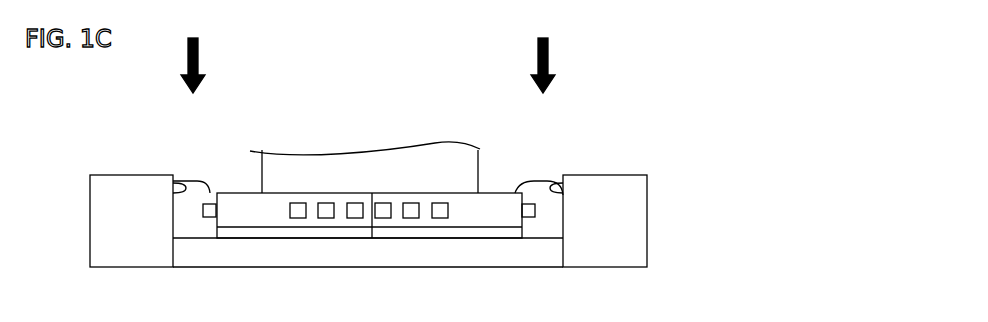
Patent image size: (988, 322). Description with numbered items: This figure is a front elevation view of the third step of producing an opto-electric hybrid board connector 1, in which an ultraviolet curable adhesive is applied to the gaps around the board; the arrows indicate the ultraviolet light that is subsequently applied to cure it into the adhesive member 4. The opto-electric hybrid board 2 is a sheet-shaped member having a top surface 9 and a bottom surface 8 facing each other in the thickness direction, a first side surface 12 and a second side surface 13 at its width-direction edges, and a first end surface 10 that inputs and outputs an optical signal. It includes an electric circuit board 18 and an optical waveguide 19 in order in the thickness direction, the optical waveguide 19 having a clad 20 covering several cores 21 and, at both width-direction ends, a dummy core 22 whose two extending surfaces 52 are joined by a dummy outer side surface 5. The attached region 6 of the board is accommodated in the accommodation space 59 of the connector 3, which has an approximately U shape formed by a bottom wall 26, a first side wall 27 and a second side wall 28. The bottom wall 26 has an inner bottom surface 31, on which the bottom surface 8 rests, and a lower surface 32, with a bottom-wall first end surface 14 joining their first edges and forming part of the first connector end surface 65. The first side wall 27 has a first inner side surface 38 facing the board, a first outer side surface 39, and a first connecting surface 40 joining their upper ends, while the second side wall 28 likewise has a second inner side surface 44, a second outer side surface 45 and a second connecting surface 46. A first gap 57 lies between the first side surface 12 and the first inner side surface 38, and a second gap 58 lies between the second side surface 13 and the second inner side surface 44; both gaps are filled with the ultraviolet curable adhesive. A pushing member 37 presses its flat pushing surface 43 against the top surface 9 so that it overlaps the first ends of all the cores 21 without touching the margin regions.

The opto-electric hybrid board connector 1 is at (372, 300).
The opto-electric hybrid board 2 is at (348, 192).
The connector 3 is at (172, 178).
The adhesive member 4 is at (593, 75).
The dummy outer side surface 5 is at (203, 208).
The attached region 6 is at (323, 192).
The bottom surface 8 is at (398, 241).
The top surface 9 is at (397, 193).
The first end surface 10 is at (247, 215).
The first side surface 12 is at (538, 214).
The second side surface 13 is at (201, 216).
The bottom-wall first end surface 14 is at (531, 262).
The electric circuit board 18 is at (232, 240).
The optical waveguide 19 is at (278, 192).
The clad 20 is at (440, 203).
The core 21 is at (412, 203).
The dummy core 22 is at (209, 194).
The bottom wall 26 is at (474, 270).
The first side wall 27 is at (647, 175).
The second side wall 28 is at (100, 172).
The inner bottom surface 31 is at (372, 193).
The lower surface 32 is at (348, 268).
The pushing member 37 is at (479, 160).
The first inner side surface 38 is at (549, 182).
The first outer side surface 39 is at (648, 190).
The first connecting surface 40 is at (627, 173).
The pushing surface 43 is at (448, 223).
The second inner side surface 44 is at (178, 186).
The second outer side surface 45 is at (90, 197).
The second connecting surface 46 is at (120, 172).
The extending surface 52 is at (204, 204).
The first gap 57 is at (525, 197).
The second gap 58 is at (193, 178).
The accommodation space 59 is at (210, 182).
The first connector end surface 65 is at (113, 223).